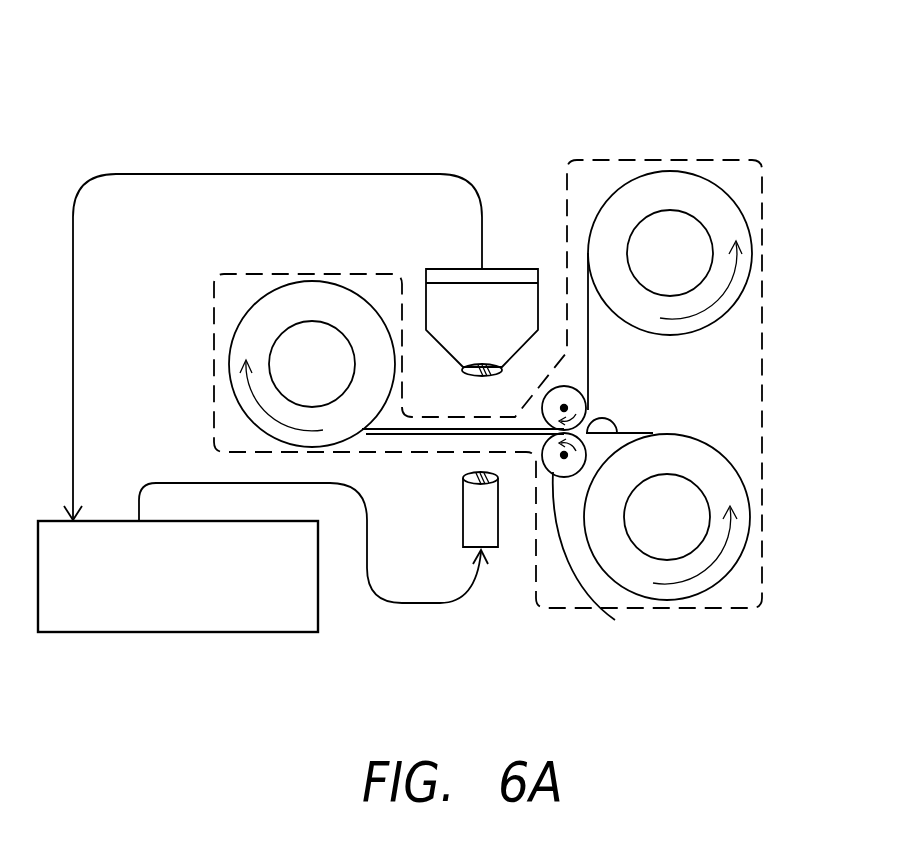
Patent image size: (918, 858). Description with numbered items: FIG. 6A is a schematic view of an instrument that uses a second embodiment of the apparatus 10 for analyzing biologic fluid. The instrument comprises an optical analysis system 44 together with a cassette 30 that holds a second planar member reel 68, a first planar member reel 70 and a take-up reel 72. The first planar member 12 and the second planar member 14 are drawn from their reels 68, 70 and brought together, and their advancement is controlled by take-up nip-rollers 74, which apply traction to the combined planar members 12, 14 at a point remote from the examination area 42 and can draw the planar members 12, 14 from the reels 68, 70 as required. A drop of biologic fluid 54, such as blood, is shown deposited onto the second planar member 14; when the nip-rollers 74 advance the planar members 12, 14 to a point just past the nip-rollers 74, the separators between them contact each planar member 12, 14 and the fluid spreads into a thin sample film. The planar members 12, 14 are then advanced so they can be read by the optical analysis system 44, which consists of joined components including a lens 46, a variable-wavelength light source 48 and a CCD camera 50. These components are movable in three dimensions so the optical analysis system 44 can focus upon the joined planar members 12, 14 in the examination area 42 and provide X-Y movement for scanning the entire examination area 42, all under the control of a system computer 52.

The apparatus 10 is at (196, 64).
The first planar member 12 is at (590, 345).
The second planar member 14 is at (628, 432).
The cassette 30 is at (621, 158).
The examination area 42 is at (484, 441).
The optical analysis system 44 is at (506, 141).
The lens 46 is at (481, 375).
The variable-wavelength light source 48 is at (489, 548).
The CCD camera 50 is at (453, 266).
The system computer 52 is at (284, 633).
The drop of biologic fluid 54 is at (597, 427).
The second planar member reel 68 is at (720, 582).
The first planar member reel 70 is at (740, 206).
The take-up reel 72 is at (243, 322).
The take-up nip-rollers 74 is at (615, 620).